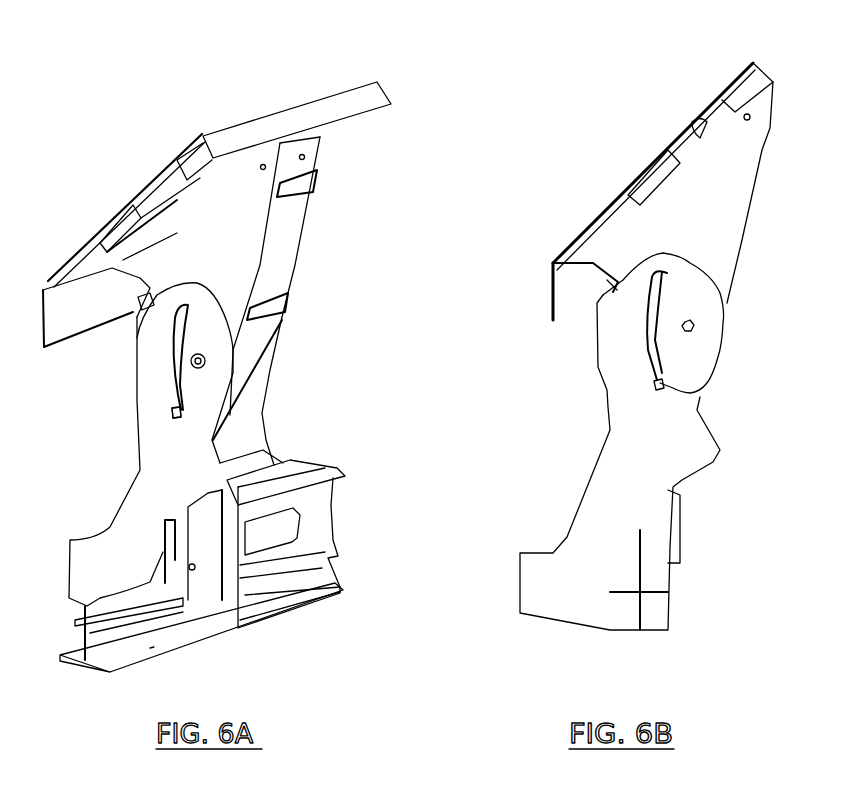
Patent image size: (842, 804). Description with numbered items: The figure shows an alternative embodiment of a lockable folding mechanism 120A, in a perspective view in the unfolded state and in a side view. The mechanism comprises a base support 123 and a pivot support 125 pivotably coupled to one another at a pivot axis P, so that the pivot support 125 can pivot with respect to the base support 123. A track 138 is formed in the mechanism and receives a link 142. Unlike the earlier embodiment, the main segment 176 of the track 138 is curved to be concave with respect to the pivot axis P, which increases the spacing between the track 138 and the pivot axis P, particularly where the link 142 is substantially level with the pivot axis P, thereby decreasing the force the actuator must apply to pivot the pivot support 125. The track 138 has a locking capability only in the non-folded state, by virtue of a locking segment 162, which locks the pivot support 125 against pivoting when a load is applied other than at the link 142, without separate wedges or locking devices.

In FIG. 6A, the folding mechanism 120A is at (374, 264).
In FIG. 6A, the pivot support 125 is at (296, 228).
In FIG. 6A, the main segment 176 is at (172, 347).
In FIG. 6B, the main segment 176 is at (647, 323).
In FIG. 6A, the track 138 is at (172, 368).
In FIG. 6A, the link 142 is at (252, 539).
In FIG. 6A, the base support 123 is at (140, 474).
In FIG. 6A, the pivot axis P is at (203, 368).
In FIG. 6B, the locking segment 162 is at (705, 390).